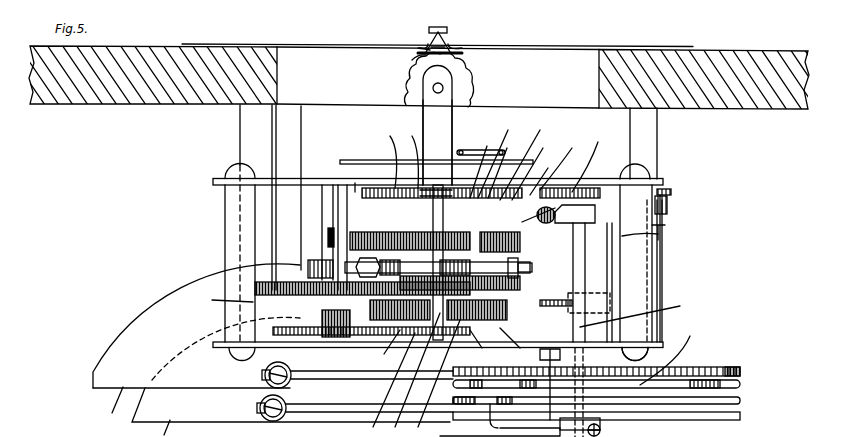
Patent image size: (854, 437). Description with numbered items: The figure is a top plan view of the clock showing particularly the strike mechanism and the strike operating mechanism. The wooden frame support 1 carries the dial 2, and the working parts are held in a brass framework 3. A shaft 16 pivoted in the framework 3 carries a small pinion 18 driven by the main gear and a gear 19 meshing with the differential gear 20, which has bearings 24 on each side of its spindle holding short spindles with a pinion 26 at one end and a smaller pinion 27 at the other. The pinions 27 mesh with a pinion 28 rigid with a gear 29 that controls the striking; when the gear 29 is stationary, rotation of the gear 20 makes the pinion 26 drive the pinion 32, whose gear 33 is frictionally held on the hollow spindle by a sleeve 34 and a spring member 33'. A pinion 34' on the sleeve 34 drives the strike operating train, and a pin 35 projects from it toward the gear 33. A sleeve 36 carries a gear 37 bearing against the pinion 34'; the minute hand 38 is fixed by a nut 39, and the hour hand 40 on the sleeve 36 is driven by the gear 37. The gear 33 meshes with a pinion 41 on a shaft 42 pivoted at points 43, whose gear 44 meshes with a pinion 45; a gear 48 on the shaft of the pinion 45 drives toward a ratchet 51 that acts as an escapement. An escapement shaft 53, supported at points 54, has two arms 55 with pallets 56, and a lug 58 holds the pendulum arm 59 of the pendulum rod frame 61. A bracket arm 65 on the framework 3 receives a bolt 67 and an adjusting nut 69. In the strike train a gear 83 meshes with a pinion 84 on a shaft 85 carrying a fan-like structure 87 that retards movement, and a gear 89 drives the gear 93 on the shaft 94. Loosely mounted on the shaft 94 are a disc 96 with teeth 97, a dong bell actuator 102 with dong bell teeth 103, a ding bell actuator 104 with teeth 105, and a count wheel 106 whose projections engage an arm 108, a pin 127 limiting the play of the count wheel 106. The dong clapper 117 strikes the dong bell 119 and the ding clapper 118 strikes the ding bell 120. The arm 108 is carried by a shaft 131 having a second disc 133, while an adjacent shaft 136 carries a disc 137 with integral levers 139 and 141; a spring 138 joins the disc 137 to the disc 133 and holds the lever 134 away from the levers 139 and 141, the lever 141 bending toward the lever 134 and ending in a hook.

The wooden frame support 1 is at (212, 47).
The dial 2 is at (262, 47).
The brass framework 3 is at (213, 343).
The shaft 16 is at (322, 212).
The small pinion 18 is at (316, 262).
The gear 19 is at (286, 283).
The differential gear 20 is at (427, 375).
The bearings 24 is at (520, 286).
The pinion 26 is at (398, 245).
The pinion 27 is at (454, 349).
The pinion 28 is at (480, 347).
The gear 29 is at (480, 320).
The pinion 32 is at (482, 165).
The gear 33 is at (502, 166).
The spring member 33' is at (498, 157).
The sleeve 34 is at (436, 175).
The pinion 34' is at (481, 138).
The pin 35 is at (400, 188).
The sleeve 36 is at (466, 66).
The gear 37 is at (378, 190).
The minute hand 38 is at (454, 36).
The nut 39 is at (428, 35).
The hour hand 40 is at (414, 58).
The pinion 41 is at (328, 234).
The shaft 42 is at (360, 187).
The pivot points 43 is at (390, 320).
The gear 44 is at (300, 327).
The pinion 45 is at (310, 335).
The gear 48 is at (222, 297).
The ratchet 51 is at (532, 268).
The escapement shaft 53 is at (394, 385).
The support points 54 is at (446, 185).
The arms 55 is at (586, 247).
The pallets 56 is at (548, 273).
The lug 58 is at (388, 155).
The pendulum arm 59 is at (410, 155).
The pendulum rod frame 61 is at (532, 167).
The bracket arm 65 is at (423, 103).
The bolt 67 is at (432, 88).
The adjusting nut 69 is at (470, 93).
The gear 83 is at (655, 187).
The pinion 84 is at (667, 210).
The shaft 85 is at (665, 226).
The fan-like structure 87 is at (664, 252).
The gear 89 is at (556, 206).
The gear 93 is at (670, 189).
The shaft 94 is at (648, 352).
The disc 96 is at (705, 367).
The teeth 97 is at (738, 367).
The dong bell actuator 102 is at (740, 372).
The dong bell teeth 103 is at (740, 385).
The ding bell actuator 104 is at (740, 401).
The teeth 105 is at (740, 416).
The count wheel 106 is at (700, 432).
The arm 108 is at (490, 420).
The dong clapper 117 is at (264, 374).
The ding clapper 118 is at (258, 408).
The dong bell 119 is at (192, 342).
The ding bell 120 is at (291, 412).
The pin 127 is at (674, 353).
The shaft 131 is at (635, 310).
The disc 133 is at (670, 236).
The lever 134 is at (556, 212).
The shaft 136 is at (564, 162).
The disc 137 is at (592, 160).
The spring 138 is at (596, 210).
The lever member 139 is at (526, 158).
The lever 141 is at (547, 175).